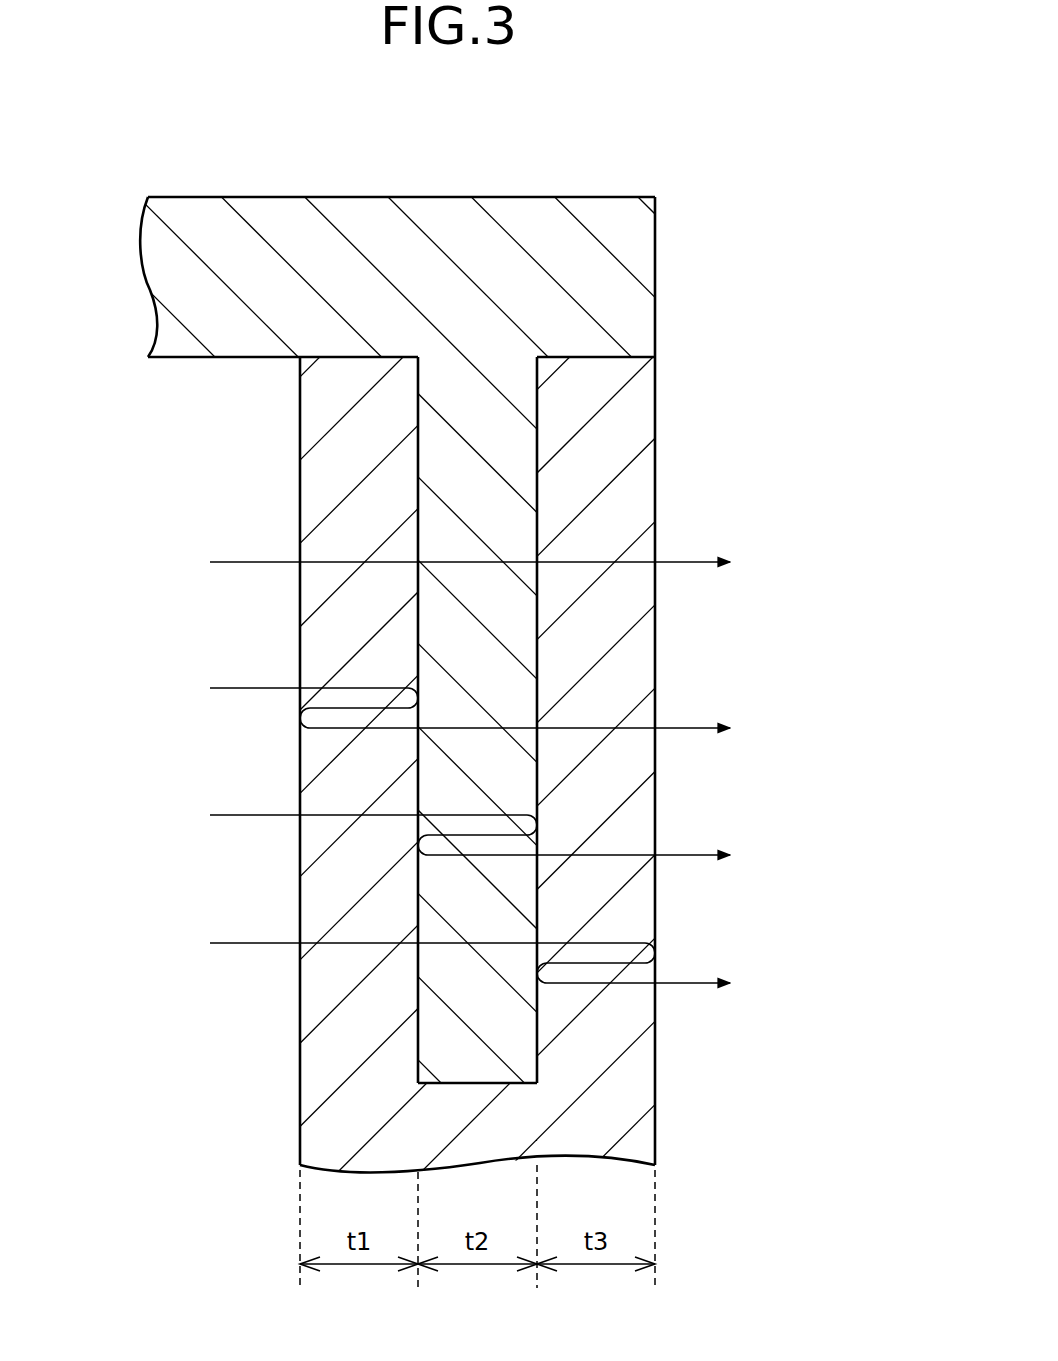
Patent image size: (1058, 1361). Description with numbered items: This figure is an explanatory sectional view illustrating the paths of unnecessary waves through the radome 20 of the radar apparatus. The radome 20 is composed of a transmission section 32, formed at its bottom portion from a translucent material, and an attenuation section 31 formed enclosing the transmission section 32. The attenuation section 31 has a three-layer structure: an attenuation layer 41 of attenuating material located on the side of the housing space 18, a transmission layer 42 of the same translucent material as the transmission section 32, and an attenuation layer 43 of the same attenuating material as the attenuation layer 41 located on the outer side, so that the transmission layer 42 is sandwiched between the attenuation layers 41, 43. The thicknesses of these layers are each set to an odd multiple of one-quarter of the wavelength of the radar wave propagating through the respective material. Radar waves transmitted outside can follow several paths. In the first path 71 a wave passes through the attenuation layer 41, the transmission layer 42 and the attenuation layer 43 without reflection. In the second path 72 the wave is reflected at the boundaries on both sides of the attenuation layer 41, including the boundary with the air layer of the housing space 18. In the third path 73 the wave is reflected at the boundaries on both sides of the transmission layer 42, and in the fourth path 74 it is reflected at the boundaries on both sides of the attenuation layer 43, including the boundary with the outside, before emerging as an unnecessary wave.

The radome 20 is at (665, 178).
The transmission section 32 is at (177, 200).
The housing space 18 is at (258, 360).
The attenuation section 31 is at (763, 373).
The attenuation layer 41 is at (353, 436).
The transmission layer 42 is at (460, 484).
The attenuation layer 43 is at (572, 508).
The first path 71 is at (227, 562).
The second path 72 is at (227, 688).
The third path 73 is at (227, 815).
The fourth path 74 is at (227, 943).